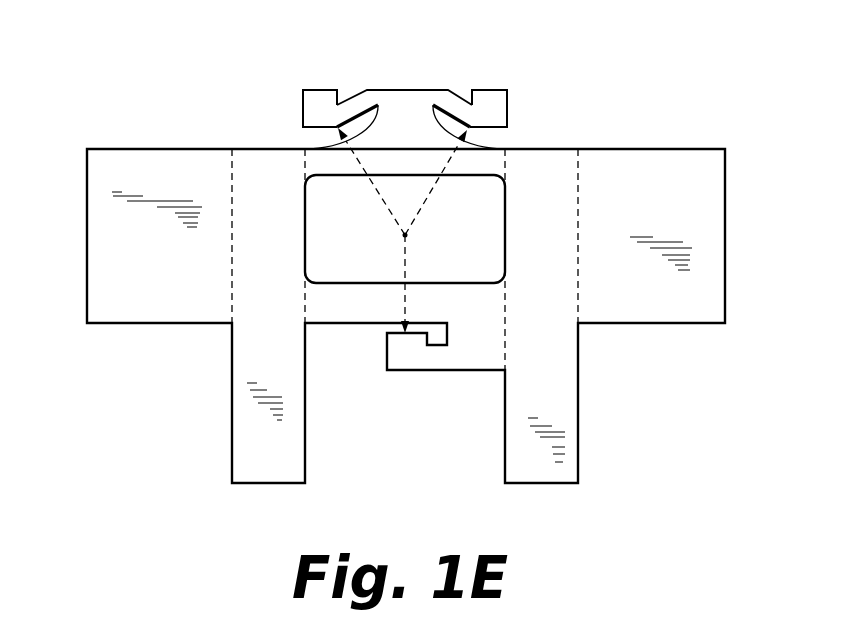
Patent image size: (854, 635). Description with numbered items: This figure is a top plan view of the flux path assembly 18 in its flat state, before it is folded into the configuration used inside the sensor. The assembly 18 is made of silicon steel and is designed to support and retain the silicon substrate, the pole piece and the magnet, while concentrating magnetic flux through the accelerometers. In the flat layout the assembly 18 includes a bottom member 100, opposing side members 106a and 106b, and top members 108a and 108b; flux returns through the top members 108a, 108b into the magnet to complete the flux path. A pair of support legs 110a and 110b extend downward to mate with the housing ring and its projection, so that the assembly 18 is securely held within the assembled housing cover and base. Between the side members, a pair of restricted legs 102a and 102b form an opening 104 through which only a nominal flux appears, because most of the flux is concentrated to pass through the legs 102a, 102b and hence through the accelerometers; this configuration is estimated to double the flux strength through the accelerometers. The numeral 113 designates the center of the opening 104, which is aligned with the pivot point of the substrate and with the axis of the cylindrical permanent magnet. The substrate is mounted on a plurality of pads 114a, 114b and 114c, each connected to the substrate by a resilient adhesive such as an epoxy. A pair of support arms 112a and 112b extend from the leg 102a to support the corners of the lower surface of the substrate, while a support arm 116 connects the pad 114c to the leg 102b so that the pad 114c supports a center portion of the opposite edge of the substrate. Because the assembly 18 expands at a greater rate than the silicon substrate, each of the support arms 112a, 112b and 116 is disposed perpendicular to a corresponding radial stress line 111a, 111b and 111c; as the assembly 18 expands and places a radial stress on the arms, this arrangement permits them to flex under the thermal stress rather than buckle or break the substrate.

The flux path assembly 18 is at (640, 134).
The bottom member 100 is at (420, 151).
The restricted leg 102a is at (490, 157).
The restricted leg 102b is at (353, 313).
The opening 104 is at (335, 282).
The side member 106a is at (243, 247).
The side member 106b is at (555, 252).
The top member 108a is at (138, 157).
The top member 108b is at (678, 315).
The support leg 110a is at (238, 425).
The support leg 110b is at (573, 428).
The radial stress line 111a is at (367, 198).
The radial stress line 111b is at (427, 215).
The radial stress line 111c is at (410, 273).
The support arm 112a is at (363, 102).
The support arm 112b is at (453, 100).
The center of the opening 113 is at (405, 235).
The mounting pad 114a is at (322, 100).
The mounting pad 114b is at (493, 100).
The mounting pad 114c is at (417, 343).
The support arm 116 is at (463, 362).